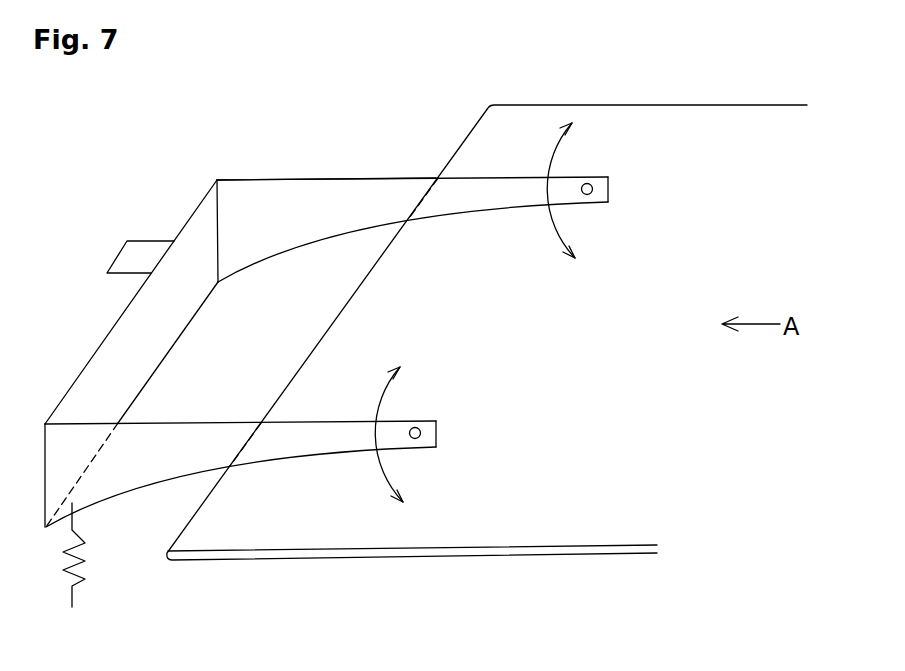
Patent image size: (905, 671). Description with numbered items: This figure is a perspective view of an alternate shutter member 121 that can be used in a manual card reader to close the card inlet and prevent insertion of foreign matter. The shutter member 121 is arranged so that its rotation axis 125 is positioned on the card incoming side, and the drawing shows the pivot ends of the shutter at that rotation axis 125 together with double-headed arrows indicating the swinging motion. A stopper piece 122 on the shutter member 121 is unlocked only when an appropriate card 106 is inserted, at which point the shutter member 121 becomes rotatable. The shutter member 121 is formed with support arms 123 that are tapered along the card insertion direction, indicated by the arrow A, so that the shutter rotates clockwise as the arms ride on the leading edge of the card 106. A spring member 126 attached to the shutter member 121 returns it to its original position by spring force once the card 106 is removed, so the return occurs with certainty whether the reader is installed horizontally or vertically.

The card 106 is at (720, 127).
The shutter member 121 is at (173, 183).
The stopper piece 122 is at (132, 260).
The support arms 123 is at (345, 197).
The rotation axis 125 is at (593, 189).
The spring member 126 is at (72, 593).